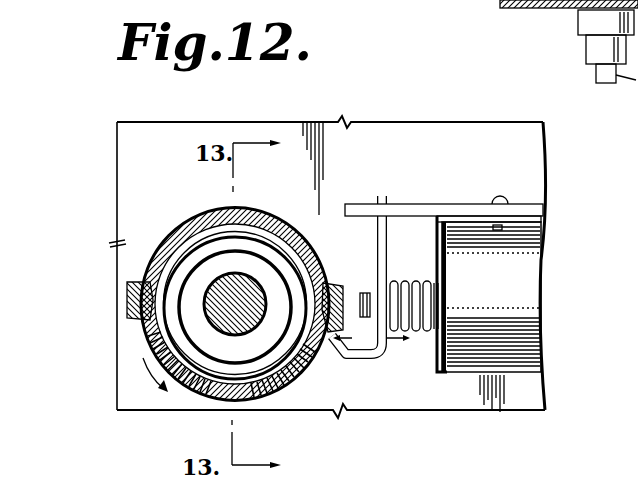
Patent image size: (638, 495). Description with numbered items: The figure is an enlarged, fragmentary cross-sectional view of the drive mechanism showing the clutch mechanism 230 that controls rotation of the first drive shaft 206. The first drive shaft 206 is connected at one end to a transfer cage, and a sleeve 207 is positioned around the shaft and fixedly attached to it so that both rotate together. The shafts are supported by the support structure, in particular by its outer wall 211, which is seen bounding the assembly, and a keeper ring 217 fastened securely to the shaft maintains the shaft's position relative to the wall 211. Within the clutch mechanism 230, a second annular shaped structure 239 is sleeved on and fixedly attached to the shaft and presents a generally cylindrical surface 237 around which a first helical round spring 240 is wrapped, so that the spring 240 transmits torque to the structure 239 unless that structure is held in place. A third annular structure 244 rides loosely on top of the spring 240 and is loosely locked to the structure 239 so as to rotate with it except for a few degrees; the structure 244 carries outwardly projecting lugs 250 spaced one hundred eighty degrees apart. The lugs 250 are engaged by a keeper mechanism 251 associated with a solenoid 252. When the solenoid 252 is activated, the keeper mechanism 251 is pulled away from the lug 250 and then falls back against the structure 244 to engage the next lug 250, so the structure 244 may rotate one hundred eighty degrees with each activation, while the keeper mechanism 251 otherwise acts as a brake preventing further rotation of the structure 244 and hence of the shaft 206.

The outer wall 211 is at (453, 128).
The clutch mechanism 230 is at (347, 182).
The third annular structure 244 is at (247, 313).
The first helical round spring 240 is at (296, 258).
The outwardly projecting lug 250 is at (127, 305).
The sleeve 207 is at (258, 280).
The first drive shaft 206 is at (258, 337).
The keeper mechanism 251 is at (357, 362).
The second annular shaped structure 239 is at (278, 356).
The cylindrical surface 237 is at (212, 373).
The solenoid 252 is at (466, 372).
The keeper ring 217 is at (580, 24).